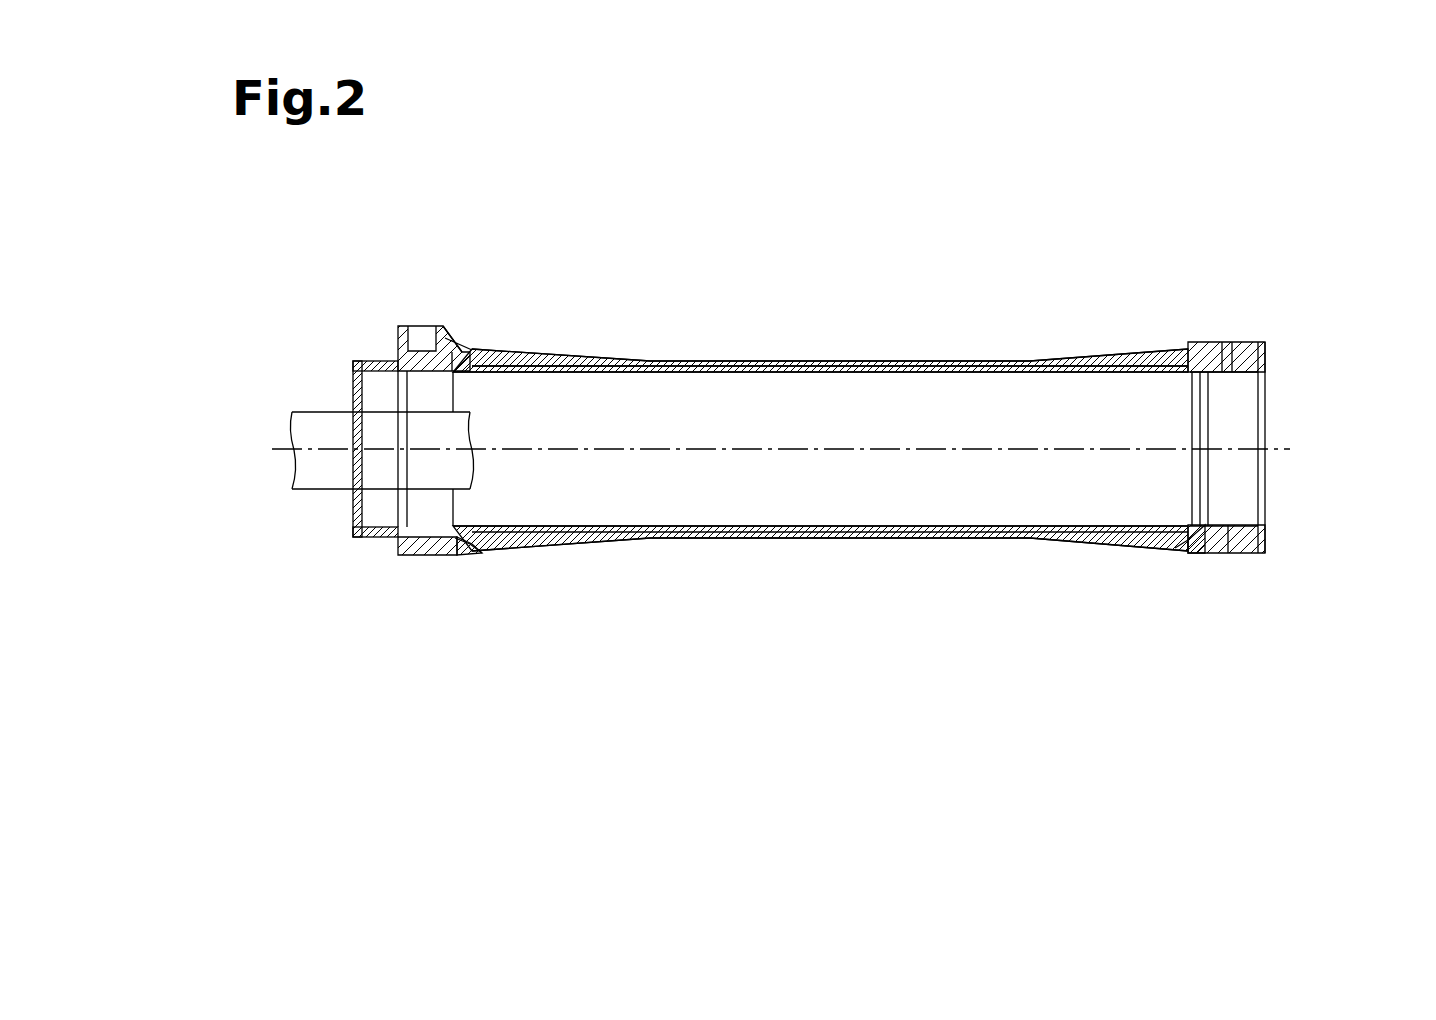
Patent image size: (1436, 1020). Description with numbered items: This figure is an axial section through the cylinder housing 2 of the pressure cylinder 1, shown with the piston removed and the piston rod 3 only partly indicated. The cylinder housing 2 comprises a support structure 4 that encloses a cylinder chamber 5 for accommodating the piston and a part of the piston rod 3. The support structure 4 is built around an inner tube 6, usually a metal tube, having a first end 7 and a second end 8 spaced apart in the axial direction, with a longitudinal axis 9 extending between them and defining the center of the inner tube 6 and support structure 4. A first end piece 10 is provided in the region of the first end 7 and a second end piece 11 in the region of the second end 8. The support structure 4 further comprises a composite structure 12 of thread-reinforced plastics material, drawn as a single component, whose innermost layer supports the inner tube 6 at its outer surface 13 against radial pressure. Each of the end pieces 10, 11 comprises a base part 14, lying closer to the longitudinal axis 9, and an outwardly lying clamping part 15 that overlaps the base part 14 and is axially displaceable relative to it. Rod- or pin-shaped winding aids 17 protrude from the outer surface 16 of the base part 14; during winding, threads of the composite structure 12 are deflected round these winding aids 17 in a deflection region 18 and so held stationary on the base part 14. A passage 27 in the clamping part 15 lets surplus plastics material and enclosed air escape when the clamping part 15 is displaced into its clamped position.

The pressure cylinder 1 is at (1248, 170).
The cylinder housing 2 is at (1349, 278).
The piston rod 3 is at (318, 482).
The support structure 4 is at (975, 334).
The cylinder chamber 5 is at (801, 506).
The inner tube 6 is at (505, 527).
The first end 7 is at (1180, 346).
The second end 8 is at (470, 350).
The longitudinal axis 9 is at (330, 446).
The first end piece 10 is at (1262, 312).
The second end piece 11 is at (272, 332).
The composite structure 12 is at (815, 362).
The outer surface 13 is at (868, 366).
The base part 14 is at (480, 560).
The clamping part 15 is at (405, 556).
The outer surface 16 is at (458, 558).
The winding aids 17 is at (456, 340).
The deflection region 18 is at (1240, 372).
The passage 27 is at (1232, 343).